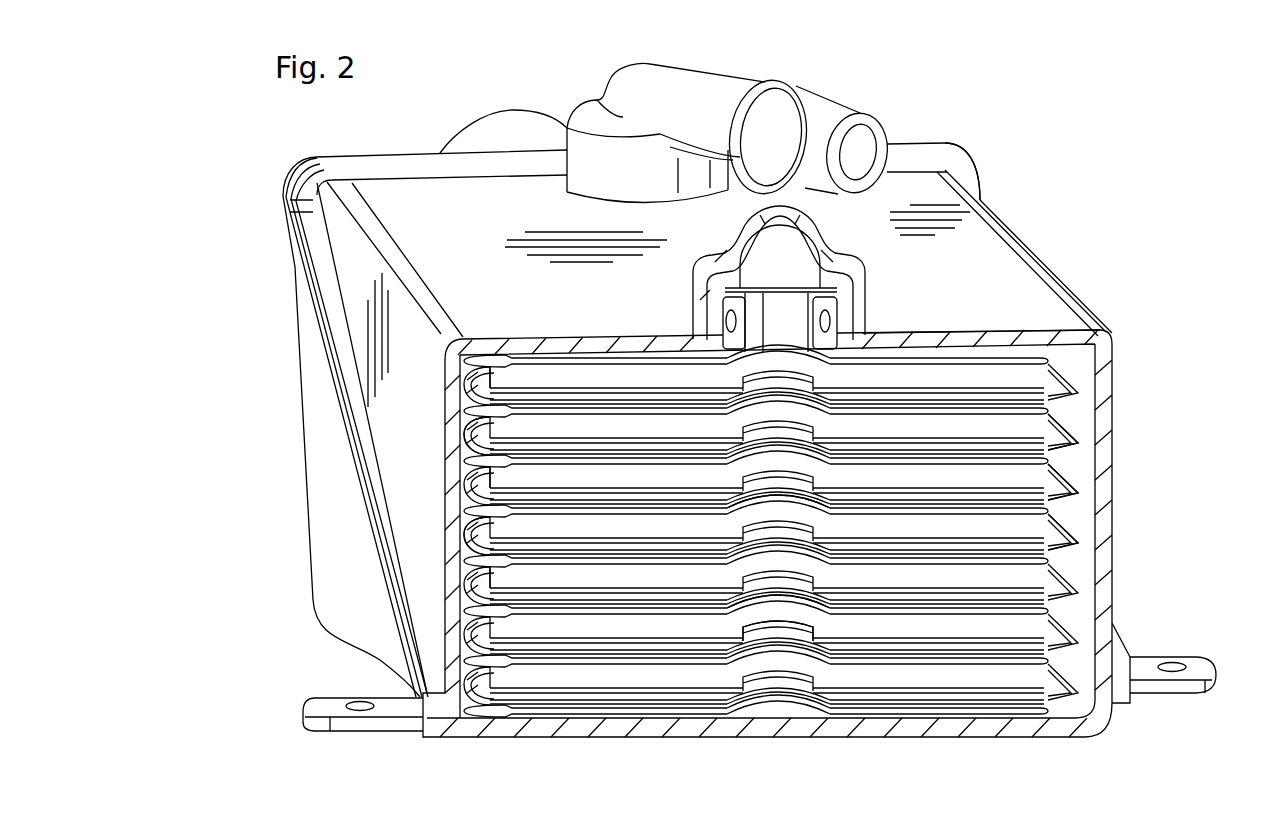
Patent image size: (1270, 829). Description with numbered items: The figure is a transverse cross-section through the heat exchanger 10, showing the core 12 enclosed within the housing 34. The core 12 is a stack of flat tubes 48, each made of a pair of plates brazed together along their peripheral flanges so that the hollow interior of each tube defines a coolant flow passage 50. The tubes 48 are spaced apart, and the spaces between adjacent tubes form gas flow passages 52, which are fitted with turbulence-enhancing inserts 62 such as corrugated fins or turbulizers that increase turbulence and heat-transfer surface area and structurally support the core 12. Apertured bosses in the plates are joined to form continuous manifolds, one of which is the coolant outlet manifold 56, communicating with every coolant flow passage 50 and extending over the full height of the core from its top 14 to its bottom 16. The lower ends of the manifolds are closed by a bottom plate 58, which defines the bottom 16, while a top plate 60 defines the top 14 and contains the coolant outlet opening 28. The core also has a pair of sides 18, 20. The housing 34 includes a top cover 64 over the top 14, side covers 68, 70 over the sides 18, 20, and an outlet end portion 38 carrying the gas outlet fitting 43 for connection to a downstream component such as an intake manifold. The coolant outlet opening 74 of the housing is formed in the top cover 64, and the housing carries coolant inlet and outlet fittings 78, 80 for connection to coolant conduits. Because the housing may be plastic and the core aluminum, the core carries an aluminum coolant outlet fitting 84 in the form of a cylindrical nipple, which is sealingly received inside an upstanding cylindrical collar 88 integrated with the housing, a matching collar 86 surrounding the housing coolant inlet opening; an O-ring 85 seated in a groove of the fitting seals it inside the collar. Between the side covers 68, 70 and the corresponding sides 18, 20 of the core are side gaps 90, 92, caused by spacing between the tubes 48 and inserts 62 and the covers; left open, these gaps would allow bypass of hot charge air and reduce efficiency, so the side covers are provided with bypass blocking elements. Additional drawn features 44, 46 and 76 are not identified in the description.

The heat exchanger 10 is at (1055, 267).
The core 12 is at (1063, 470).
The top 14 is at (935, 345).
The bottom 16 is at (878, 725).
The side 18 is at (510, 515).
The side 20 is at (1063, 518).
The coolant outlet opening 28 is at (777, 353).
The housing 34 is at (1113, 388).
The outlet end portion 38 is at (293, 343).
The gas outlet fitting 43 is at (500, 130).
The cover corner 44 is at (1080, 307).
The housing side wall 46 is at (300, 423).
The flat tubes 48 is at (540, 460).
The coolant flow passage 50 is at (845, 450).
The gas flow passages 52 is at (771, 531).
The coolant outlet manifold 56 is at (777, 613).
The bottom plate 58 is at (613, 337).
The top plate 60 is at (967, 343).
The turbulence-enhancing inserts 62 is at (955, 687).
The top cover 64 is at (403, 197).
The side cover 68 is at (400, 460).
The side cover 70 is at (1113, 573).
The coolant outlet opening 74 is at (773, 300).
The cover edge 76 is at (313, 166).
The coolant inlet fitting 78 is at (654, 77).
The coolant outlet fitting 80 is at (815, 230).
The coolant outlet fitting 84 is at (735, 300).
The O-ring 85 is at (723, 323).
The collar 86 is at (589, 187).
The collar 88 is at (840, 300).
The side gap 90 is at (467, 427).
The side gap 92 is at (1063, 417).